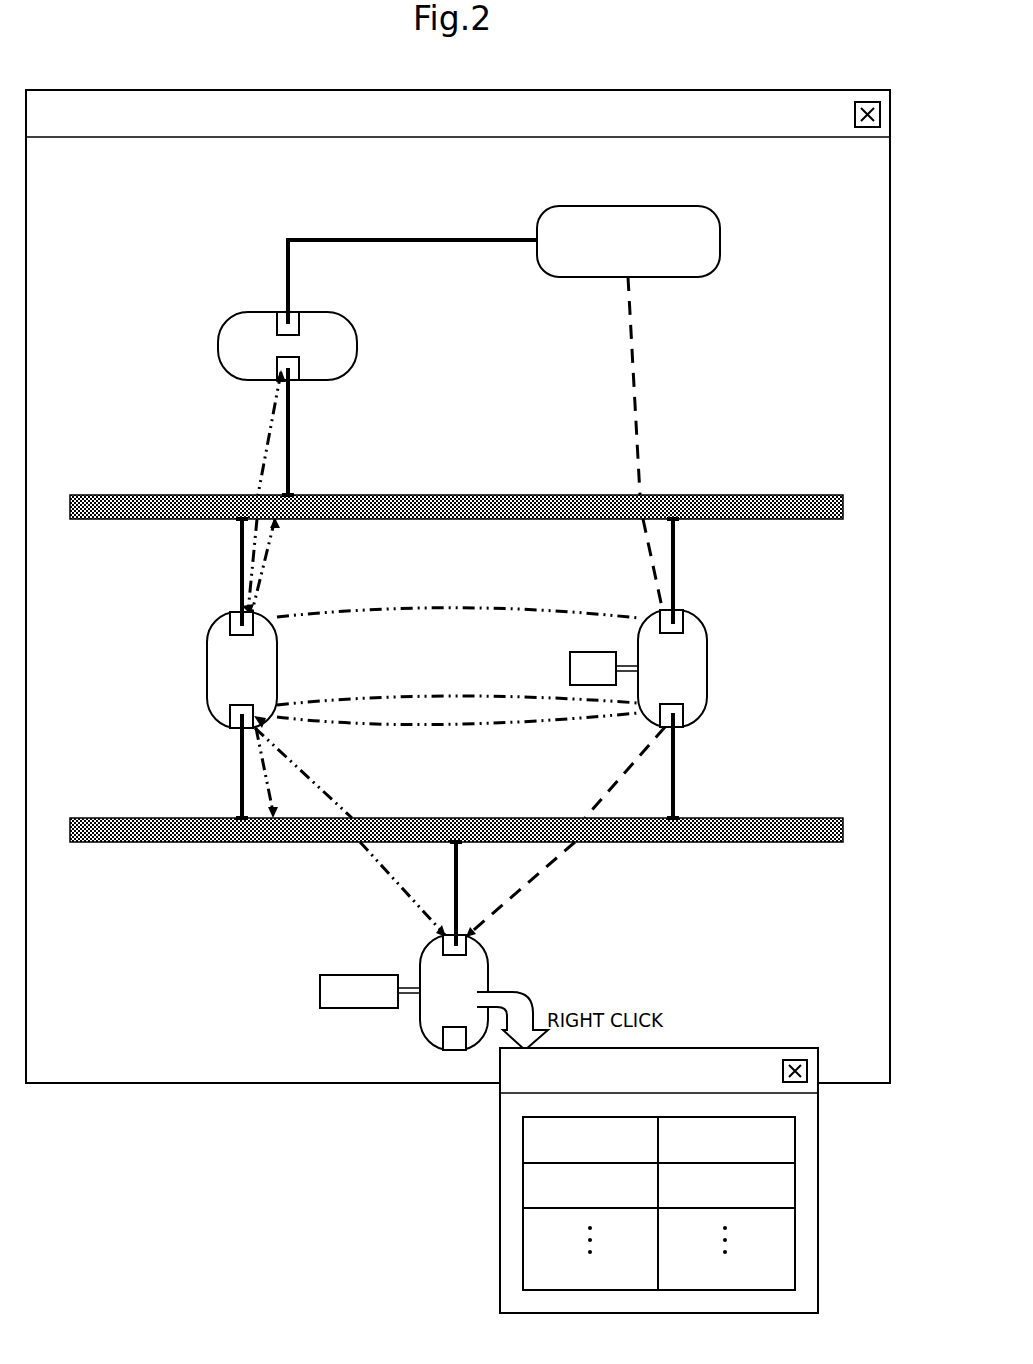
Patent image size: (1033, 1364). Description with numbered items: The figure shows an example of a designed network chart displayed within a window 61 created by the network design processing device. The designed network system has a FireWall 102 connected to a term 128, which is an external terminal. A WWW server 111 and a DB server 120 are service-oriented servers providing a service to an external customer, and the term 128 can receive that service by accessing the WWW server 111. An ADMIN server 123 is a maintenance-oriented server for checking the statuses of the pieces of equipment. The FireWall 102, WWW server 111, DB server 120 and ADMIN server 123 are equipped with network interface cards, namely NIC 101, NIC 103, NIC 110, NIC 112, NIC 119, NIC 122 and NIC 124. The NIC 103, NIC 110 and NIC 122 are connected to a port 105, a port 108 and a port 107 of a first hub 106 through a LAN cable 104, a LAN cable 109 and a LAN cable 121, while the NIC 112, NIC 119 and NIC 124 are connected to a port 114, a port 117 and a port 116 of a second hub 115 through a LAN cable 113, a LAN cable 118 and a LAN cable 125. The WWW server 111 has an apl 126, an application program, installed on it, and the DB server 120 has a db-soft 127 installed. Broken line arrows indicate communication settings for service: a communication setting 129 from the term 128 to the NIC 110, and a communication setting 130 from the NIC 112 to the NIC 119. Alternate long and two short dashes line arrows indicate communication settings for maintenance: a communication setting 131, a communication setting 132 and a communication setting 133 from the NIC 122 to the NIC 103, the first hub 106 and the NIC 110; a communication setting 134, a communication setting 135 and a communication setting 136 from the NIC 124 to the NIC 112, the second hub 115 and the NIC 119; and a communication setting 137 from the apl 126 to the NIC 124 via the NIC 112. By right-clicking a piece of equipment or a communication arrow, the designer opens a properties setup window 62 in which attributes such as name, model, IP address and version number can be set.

The window of the network chart 61 is at (436, 90).
The properties setup window 62 is at (757, 1048).
The network interface card 101 is at (299, 322).
The FireWall 102 is at (357, 345).
The NIC 103 is at (299, 372).
The LAN cable 104 is at (290, 452).
The port 105 is at (290, 492).
The HUB(1) 106 is at (483, 495).
The port 107 is at (242, 525).
The port 108 is at (676, 523).
The LAN cable 109 is at (676, 570).
The NIC 110 is at (684, 620).
The WWW server 111 is at (707, 668).
The NIC 112 is at (684, 722).
The LAN cable 113 is at (676, 765).
The port 114 is at (676, 805).
The HUB(2) 115 is at (512, 818).
The port 116 is at (242, 812).
The port 117 is at (456, 848).
The LAN cable 118 is at (459, 877).
The NIC 119 is at (488, 982).
The DB server 120 is at (420, 963).
The LAN cable 121 is at (242, 570).
The NIC 122 is at (230, 618).
The ADMIN server 123 is at (207, 668).
The NIC 124 is at (230, 725).
The LAN cable 125 is at (242, 772).
The apl 126 is at (570, 655).
The db-soft 127 is at (320, 993).
The term 128 is at (632, 206).
The communication setting 129 is at (637, 380).
The communication setting 130 is at (528, 880).
The communication setting 131 is at (266, 446).
The communication setting 132 is at (268, 572).
The communication setting 133 is at (454, 610).
The communication setting 134 is at (430, 724).
The communication setting 135 is at (290, 765).
The communication setting 136 is at (400, 893).
The communication setting 137 is at (447, 702).